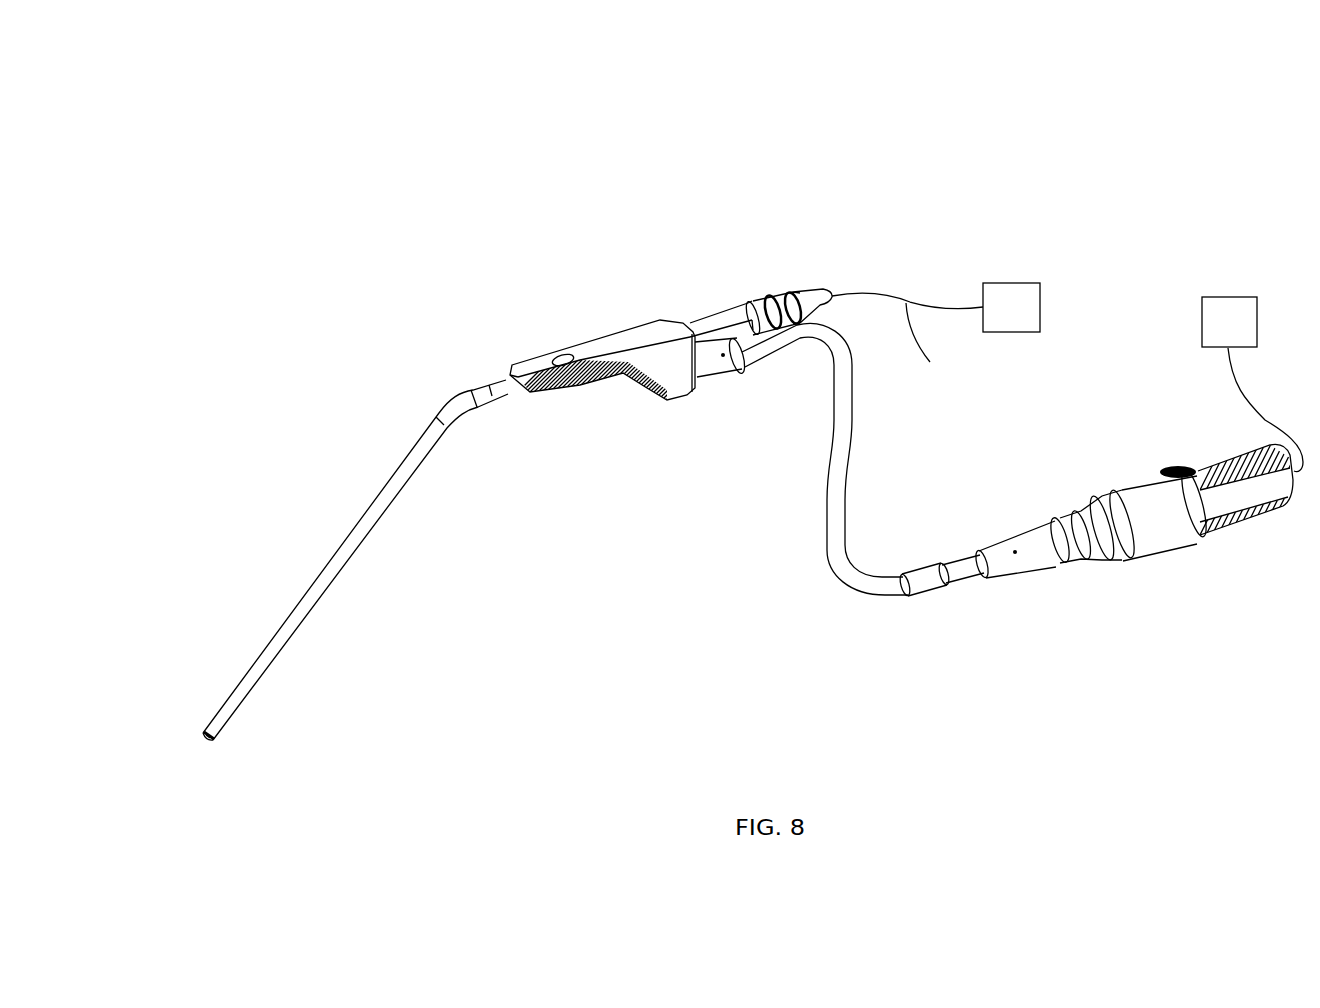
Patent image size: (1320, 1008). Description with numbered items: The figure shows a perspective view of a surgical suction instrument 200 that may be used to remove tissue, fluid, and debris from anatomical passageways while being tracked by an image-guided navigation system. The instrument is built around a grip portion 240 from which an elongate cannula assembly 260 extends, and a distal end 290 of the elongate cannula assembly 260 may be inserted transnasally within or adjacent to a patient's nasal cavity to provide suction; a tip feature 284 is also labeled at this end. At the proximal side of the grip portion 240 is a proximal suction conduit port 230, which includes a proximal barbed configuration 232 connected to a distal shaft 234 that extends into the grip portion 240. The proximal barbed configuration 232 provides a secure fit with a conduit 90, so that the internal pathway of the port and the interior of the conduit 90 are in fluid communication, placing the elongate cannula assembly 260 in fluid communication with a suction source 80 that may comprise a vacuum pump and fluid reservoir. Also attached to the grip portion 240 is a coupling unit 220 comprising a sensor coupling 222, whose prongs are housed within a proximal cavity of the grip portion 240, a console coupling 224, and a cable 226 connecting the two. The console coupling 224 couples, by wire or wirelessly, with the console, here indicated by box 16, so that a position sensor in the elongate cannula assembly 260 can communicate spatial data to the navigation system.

The surgical suction instrument 200 is at (312, 161).
The grip portion 240 is at (581, 255).
The proximal suction conduit port 230 is at (751, 245).
The proximal barbed configuration 232 is at (792, 292).
The distal shaft 234 is at (722, 322).
The suction source 80 is at (1027, 324).
The conduit 90 is at (934, 347).
The control unit 16 is at (1244, 338).
The coupling unit 220 is at (958, 435).
The sensor coupling 222 is at (713, 399).
The cable 226 is at (845, 490).
The console coupling 224 is at (1176, 568).
The elongate cannula assembly 260 is at (393, 560).
The distal end 290 is at (202, 742).
The distal end 284 is at (214, 744).